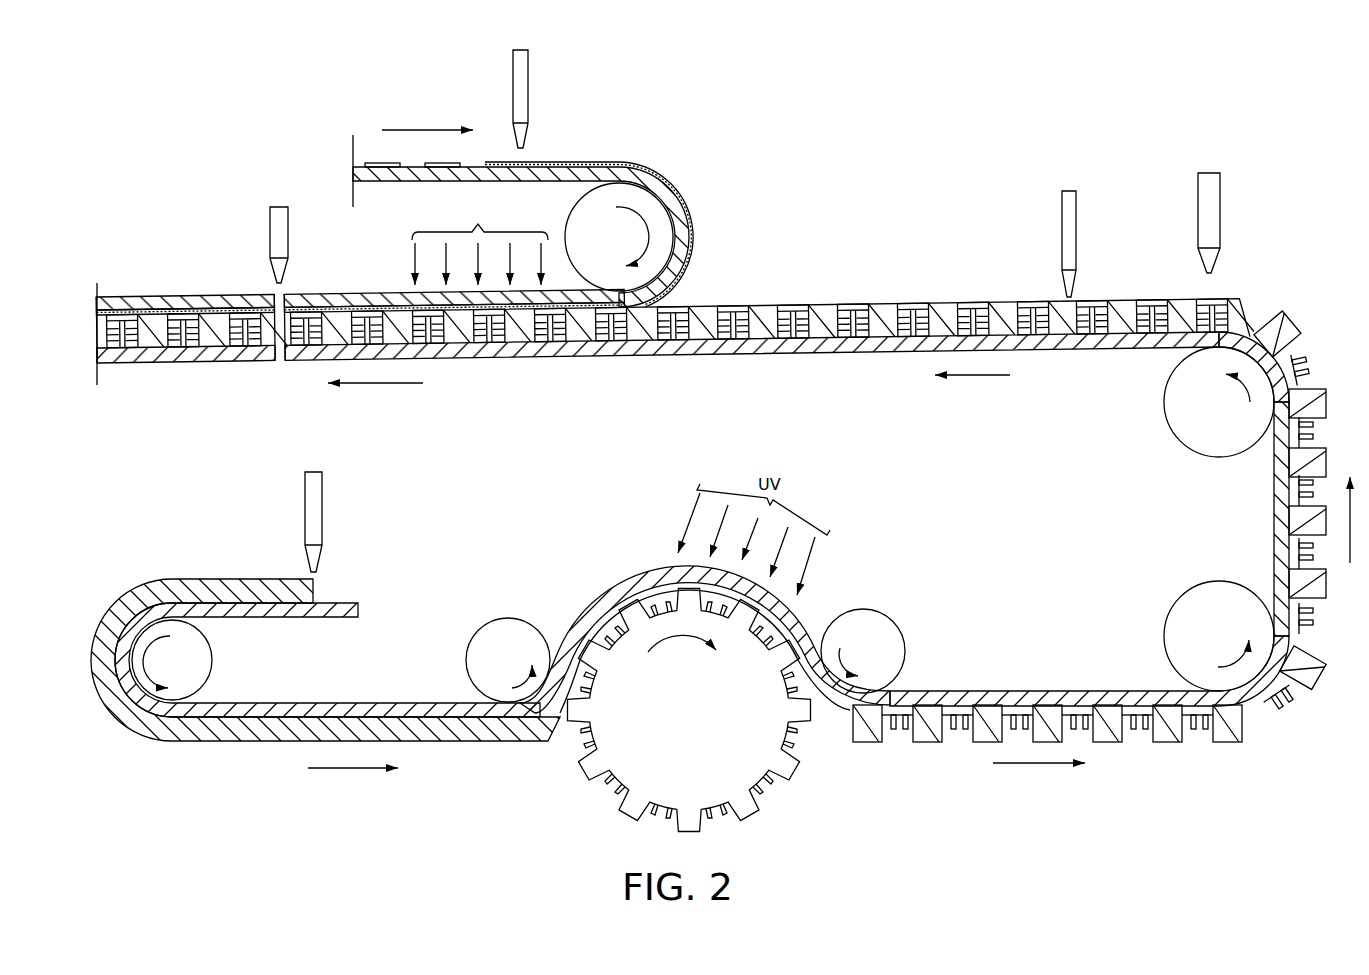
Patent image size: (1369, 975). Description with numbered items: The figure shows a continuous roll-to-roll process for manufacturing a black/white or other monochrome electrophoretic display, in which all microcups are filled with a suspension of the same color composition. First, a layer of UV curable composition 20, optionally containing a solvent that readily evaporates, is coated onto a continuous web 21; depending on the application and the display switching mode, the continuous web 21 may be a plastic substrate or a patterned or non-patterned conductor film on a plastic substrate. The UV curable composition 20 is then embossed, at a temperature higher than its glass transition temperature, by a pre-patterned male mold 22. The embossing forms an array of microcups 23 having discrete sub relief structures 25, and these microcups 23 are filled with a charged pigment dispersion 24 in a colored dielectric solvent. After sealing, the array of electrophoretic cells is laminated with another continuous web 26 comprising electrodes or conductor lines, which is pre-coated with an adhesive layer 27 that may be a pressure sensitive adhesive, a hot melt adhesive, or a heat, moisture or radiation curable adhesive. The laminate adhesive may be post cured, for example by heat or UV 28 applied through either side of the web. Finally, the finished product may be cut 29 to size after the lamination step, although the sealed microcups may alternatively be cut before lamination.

The UV curable composition 20 is at (235, 745).
The continuous web 21 is at (327, 705).
The pre-patterned male mold 22 is at (597, 792).
The microcups 23 is at (1131, 733).
The charged pigment dispersion 24 is at (1222, 296).
The discrete sub relief structures 25 is at (1192, 730).
The continuous web 26 is at (687, 214).
The adhesive layer 27 is at (650, 164).
The UV 28 is at (412, 258).
The cut 29 is at (272, 246).